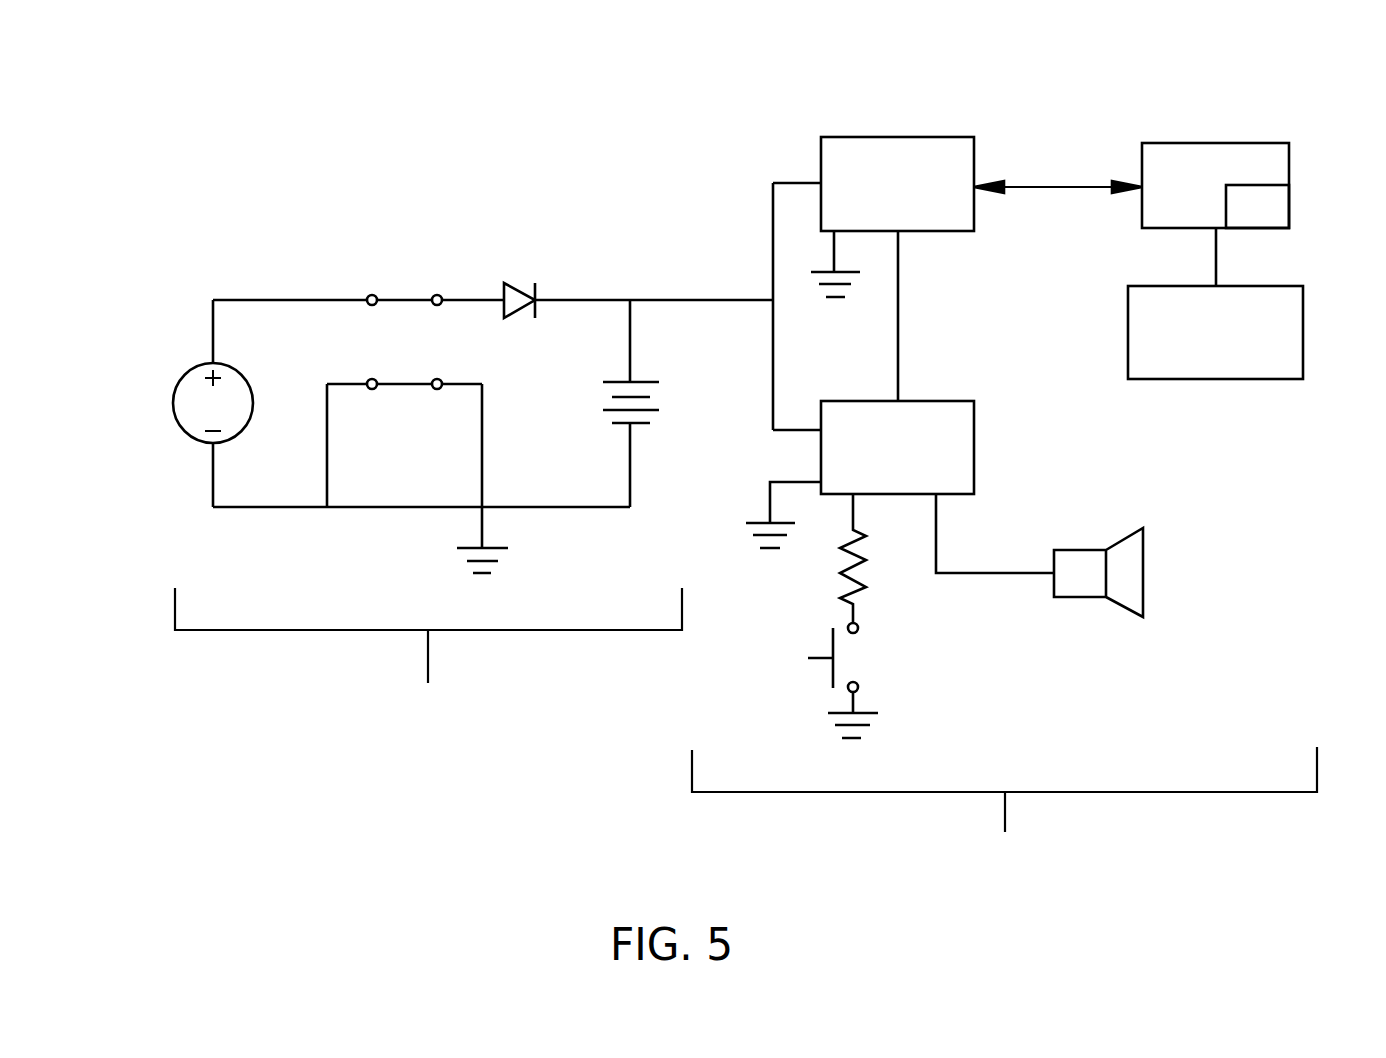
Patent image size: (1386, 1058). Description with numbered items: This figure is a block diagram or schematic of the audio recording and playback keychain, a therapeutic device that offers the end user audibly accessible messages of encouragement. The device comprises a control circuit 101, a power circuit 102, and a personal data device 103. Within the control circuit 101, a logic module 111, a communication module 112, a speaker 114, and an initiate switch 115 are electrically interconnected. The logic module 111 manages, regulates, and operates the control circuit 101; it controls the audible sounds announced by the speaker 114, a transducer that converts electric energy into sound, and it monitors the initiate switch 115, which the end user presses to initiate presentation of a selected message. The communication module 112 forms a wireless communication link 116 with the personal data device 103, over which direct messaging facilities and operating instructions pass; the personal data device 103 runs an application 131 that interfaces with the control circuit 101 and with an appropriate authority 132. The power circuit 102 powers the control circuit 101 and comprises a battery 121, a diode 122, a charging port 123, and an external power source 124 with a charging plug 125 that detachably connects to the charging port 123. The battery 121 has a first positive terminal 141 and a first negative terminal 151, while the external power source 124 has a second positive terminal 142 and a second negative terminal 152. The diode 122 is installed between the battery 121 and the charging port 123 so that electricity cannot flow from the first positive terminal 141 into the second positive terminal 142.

The control circuit 101 is at (1004, 811).
The power circuit 102 is at (428, 659).
The personal data device 103 is at (1284, 133).
The logic module 111 is at (948, 422).
The communication module 112 is at (950, 153).
The speaker 114 is at (1143, 568).
The initiate switch 115 is at (817, 683).
The wireless communication link 116 is at (1055, 173).
The battery 121 is at (598, 398).
The diode 122 is at (522, 283).
The charging port 123 is at (437, 292).
The external power source 124 is at (173, 402).
The charging plug 125 is at (372, 293).
The application 131 is at (1284, 211).
The appropriate authority 132 is at (1212, 367).
The first positive terminal 141 is at (632, 340).
The second positive terminal 142 is at (213, 343).
The first negative terminal 151 is at (632, 464).
The second negative terminal 152 is at (213, 453).